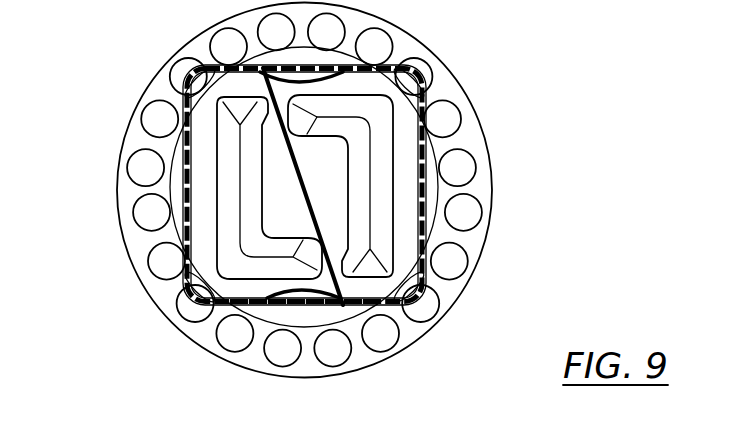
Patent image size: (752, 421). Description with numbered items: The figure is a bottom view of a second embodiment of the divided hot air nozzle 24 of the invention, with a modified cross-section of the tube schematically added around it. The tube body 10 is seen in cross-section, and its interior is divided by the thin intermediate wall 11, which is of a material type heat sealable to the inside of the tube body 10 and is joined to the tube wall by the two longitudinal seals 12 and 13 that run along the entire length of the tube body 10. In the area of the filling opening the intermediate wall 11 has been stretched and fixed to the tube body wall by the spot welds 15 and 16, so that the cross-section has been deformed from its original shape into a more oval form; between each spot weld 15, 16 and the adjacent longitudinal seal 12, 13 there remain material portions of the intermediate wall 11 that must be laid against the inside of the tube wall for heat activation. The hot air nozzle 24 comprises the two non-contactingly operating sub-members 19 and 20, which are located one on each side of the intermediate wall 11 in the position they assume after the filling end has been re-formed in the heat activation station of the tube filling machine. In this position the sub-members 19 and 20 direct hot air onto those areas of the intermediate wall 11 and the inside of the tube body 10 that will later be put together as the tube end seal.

The spot weld 16 is at (212, 24).
The hot air nozzle 24 is at (464, 74).
The tube body 10 is at (420, 134).
The longitudinal seal 13 is at (310, 60).
The sub-member of hot air nozzle 19 is at (227, 195).
The sub-member of hot air nozzle 20 is at (377, 183).
The intermediate wall 11 is at (311, 205).
The longitudinal seal 12 is at (267, 303).
The spot weld 15 is at (340, 307).